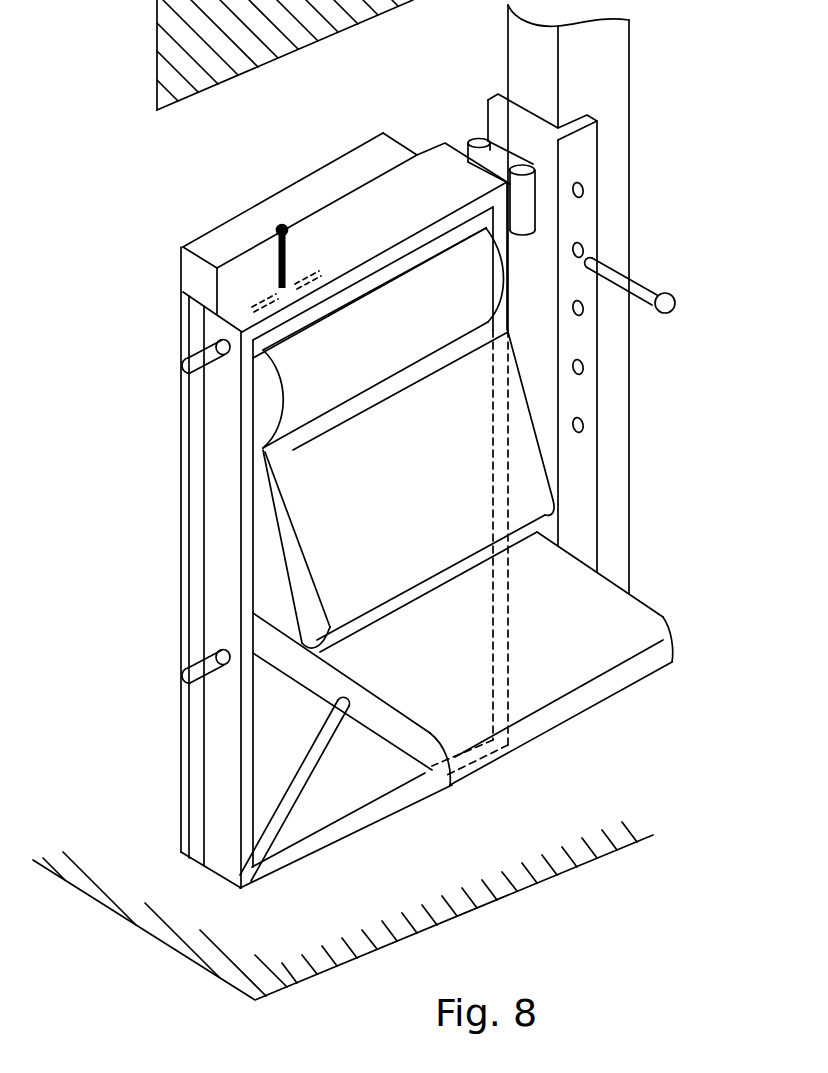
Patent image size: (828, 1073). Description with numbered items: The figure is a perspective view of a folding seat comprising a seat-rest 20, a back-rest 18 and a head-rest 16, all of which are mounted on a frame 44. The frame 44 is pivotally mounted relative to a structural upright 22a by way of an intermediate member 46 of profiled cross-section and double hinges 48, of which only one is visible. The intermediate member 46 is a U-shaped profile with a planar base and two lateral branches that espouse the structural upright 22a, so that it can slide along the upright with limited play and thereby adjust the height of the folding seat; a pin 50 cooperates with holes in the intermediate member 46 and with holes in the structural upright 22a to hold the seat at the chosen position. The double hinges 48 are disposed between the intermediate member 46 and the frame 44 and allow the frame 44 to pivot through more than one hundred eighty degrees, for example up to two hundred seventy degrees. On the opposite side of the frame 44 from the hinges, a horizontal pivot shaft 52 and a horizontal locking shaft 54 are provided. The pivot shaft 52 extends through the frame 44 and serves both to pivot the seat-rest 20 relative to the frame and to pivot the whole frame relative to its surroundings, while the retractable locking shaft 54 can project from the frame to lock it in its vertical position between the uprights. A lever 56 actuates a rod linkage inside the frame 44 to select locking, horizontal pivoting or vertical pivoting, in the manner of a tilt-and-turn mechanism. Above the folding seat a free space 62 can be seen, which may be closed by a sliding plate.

The head-rest 16 is at (420, 343).
The back-rest 18 is at (430, 491).
The seat-rest 20 is at (467, 673).
The structural upright 22a is at (612, 45).
The frame 44 is at (220, 515).
The intermediate member of profiled cross-section 46 is at (580, 480).
The double hinges 48 is at (478, 139).
The pin 50 is at (648, 292).
The horizontal pivot shaft 52 is at (183, 677).
The horizontal locking shaft 54 is at (183, 367).
The lever 56 is at (282, 224).
The space 62 is at (176, 181).